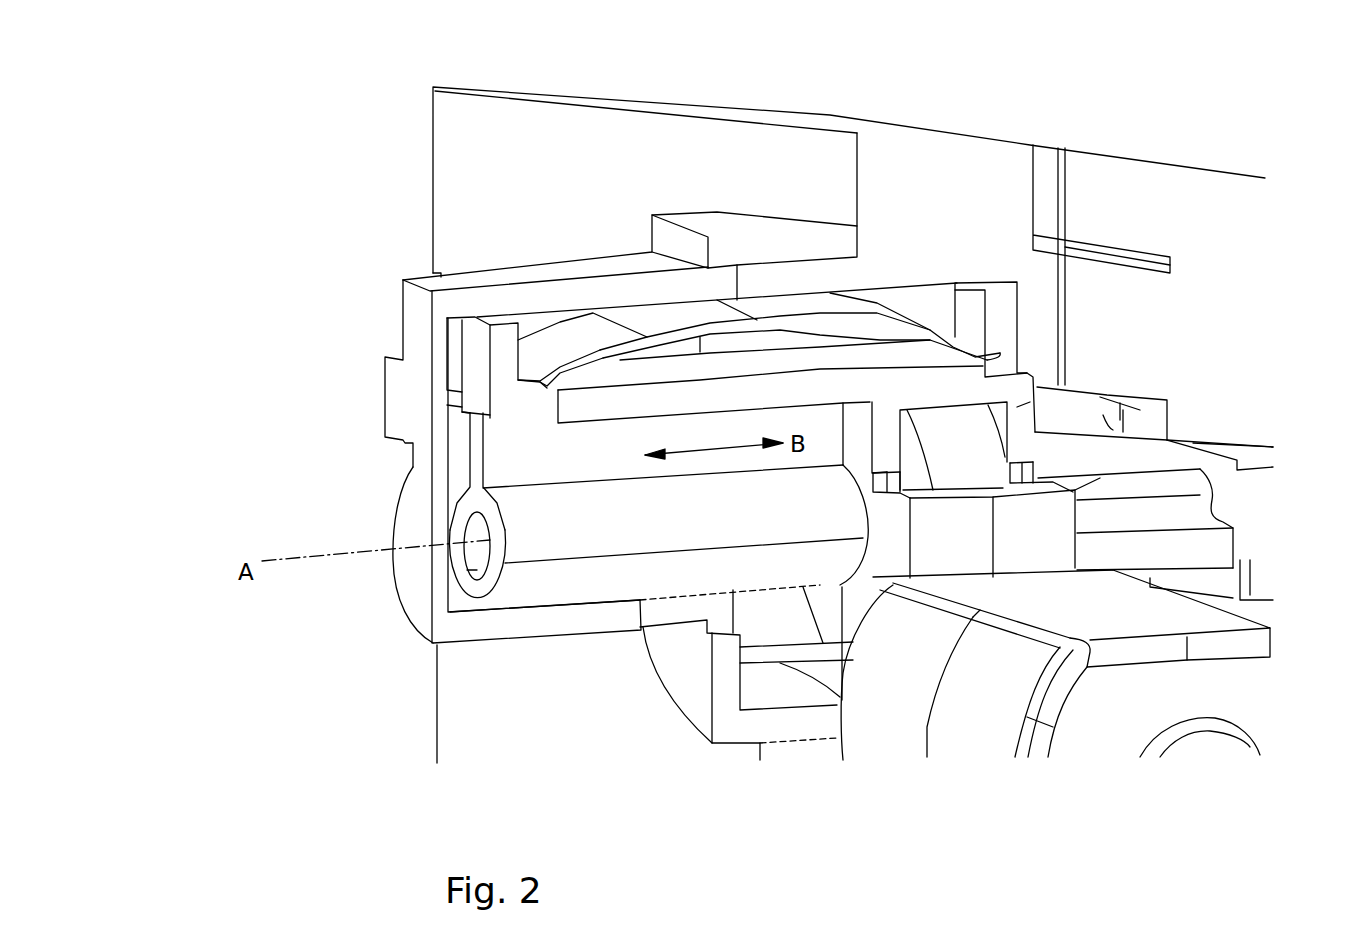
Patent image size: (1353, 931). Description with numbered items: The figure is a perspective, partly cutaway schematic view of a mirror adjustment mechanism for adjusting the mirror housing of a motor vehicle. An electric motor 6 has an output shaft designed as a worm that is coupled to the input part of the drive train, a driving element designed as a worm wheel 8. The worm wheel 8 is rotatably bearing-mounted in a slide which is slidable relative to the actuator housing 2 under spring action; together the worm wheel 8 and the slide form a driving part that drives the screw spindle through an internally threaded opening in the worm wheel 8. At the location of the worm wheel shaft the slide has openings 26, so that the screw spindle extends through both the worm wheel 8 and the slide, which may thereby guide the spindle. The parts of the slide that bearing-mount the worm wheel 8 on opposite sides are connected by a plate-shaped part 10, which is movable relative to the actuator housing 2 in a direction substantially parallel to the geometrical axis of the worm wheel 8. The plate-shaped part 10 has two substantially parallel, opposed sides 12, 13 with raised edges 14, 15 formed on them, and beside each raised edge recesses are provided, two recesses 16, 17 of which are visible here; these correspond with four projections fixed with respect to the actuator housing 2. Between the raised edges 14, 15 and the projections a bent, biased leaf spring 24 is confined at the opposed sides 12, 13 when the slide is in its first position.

The actuator housing 2 is at (777, 425).
The electric motor 6 is at (1057, 696).
The worm wheel 8 is at (978, 490).
The plate-shaped part 10 is at (1152, 423).
The opposed side 12 is at (447, 416).
The opposed side 13 is at (800, 197).
The raised edge 14 is at (418, 354).
The raised edge 15 is at (997, 243).
The recess 16 is at (637, 400).
The recess 17 is at (1143, 265).
The leaf spring 24 is at (623, 255).
The opening 26 is at (581, 534).